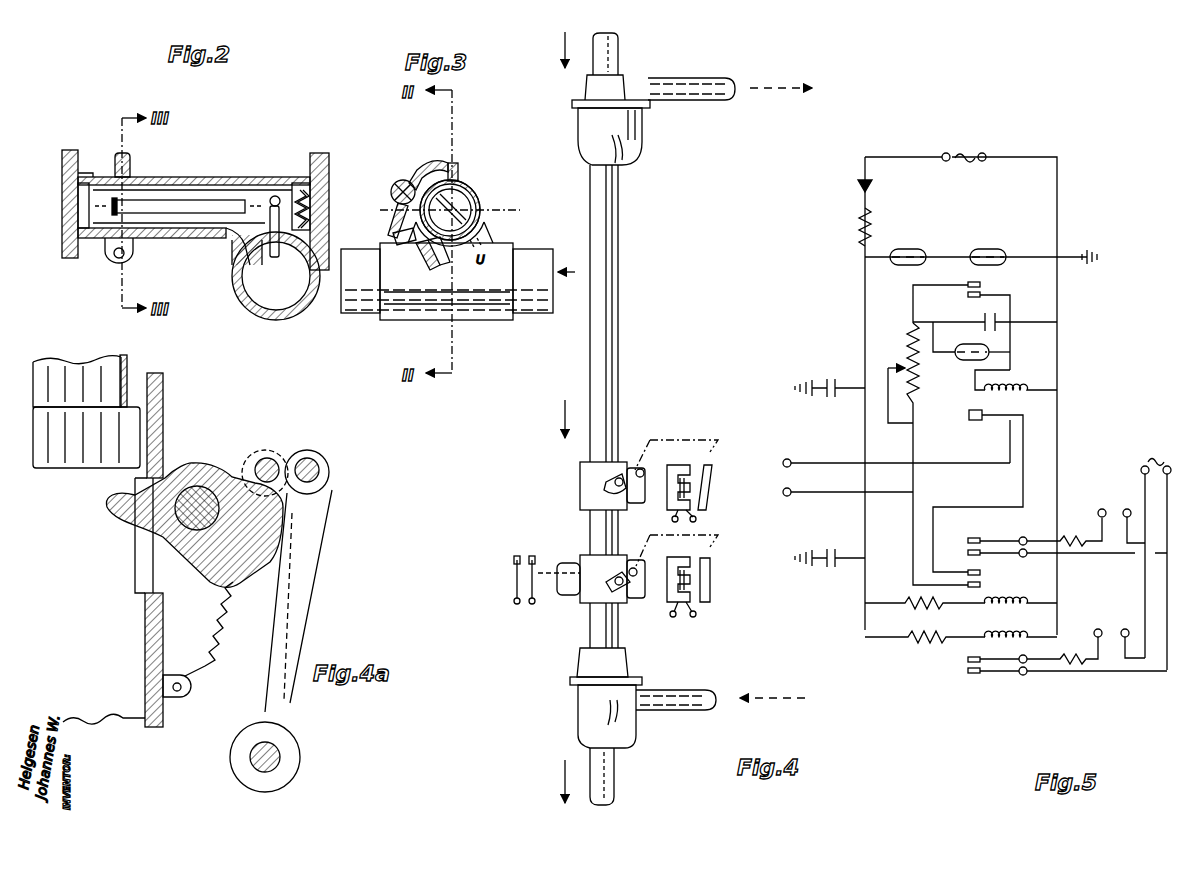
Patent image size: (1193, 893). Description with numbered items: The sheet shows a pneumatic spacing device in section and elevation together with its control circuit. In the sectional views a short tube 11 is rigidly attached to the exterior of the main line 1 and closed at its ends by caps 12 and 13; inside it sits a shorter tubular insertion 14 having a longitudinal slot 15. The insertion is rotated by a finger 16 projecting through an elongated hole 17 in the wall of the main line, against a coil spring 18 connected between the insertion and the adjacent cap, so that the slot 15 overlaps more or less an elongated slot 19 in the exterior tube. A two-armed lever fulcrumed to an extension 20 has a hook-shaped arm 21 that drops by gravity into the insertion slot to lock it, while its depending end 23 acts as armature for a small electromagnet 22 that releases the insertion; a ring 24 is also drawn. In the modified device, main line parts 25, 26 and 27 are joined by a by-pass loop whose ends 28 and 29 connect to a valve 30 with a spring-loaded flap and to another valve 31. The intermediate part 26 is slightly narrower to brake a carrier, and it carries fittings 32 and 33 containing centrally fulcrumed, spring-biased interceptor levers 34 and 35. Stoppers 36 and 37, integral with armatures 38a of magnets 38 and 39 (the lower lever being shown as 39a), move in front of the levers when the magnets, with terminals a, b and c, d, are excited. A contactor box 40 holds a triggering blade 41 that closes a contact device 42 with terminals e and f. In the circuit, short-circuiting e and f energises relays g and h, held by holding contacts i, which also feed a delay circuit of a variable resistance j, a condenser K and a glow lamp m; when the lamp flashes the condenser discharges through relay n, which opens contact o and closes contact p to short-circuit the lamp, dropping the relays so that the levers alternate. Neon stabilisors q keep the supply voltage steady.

In FIG. 2, the main line 1 is at (282, 322).
In FIG. 2, the short tube 11 is at (300, 180).
In FIG. 3, the short tube 11 is at (478, 192).
In FIG. 2, the cap 12 is at (329, 223).
In FIG. 2, the cap 13 is at (62, 250).
In FIG. 2, the tubular insertion 14 is at (170, 184).
In FIG. 3, the tubular insertion 14 is at (486, 203).
In FIG. 2, the longitudinal slot 15 is at (190, 213).
In FIG. 3, the longitudinal slot 15 is at (394, 209).
In FIG. 2, the finger 16 is at (238, 300).
In FIG. 3, the finger 16 is at (500, 234).
In FIG. 2, the elongated hole 17 is at (290, 238).
In FIG. 2, the coil spring 18 is at (320, 192).
In FIG. 2, the elongated slot 19 is at (205, 177).
In FIG. 3, the elongated slot 19 is at (468, 173).
In FIG. 3, the extension 20 is at (419, 172).
In FIG. 2, the arm 21 is at (128, 161).
In FIG. 3, the arm 21 is at (444, 163).
In FIG. 3, the electromagnet 22 is at (426, 252).
In FIG. 3, the depending end 23 is at (395, 222).
In FIG. 2, the ring 24 is at (300, 306).
In FIG. 4, the main line part 25 is at (620, 52).
In FIG. 4A, the main line part 26 is at (165, 398).
In FIG. 4, the main line part 26 is at (612, 326).
In FIG. 4, the main line part 27 is at (614, 778).
In FIG. 4, the loop end 28 is at (690, 78).
In FIG. 4, the loop end 29 is at (688, 690).
In FIG. 4, the valve 30 is at (625, 152).
In FIG. 4, the valve 31 is at (592, 705).
In FIG. 4, the fitting 32 is at (597, 492).
In FIG. 4, the fitting 33 is at (590, 603).
In FIG. 4A, the interceptor lever 34 is at (185, 463).
In FIG. 4, the interceptor lever 34 is at (630, 474).
In FIG. 4, the interceptor lever 35 is at (632, 595).
In FIG. 4A, the stopper 36 is at (316, 457).
In FIG. 4, the stopper 36 is at (641, 468).
In FIG. 4, the stopper 37 is at (637, 572).
In FIG. 4, the magnet 38 is at (685, 468).
In FIG. 4A, the armature 38a is at (307, 594).
In FIG. 4, the armature 38a is at (712, 472).
In FIG. 4, the magnet 39 is at (690, 560).
In FIG. 4, the lower switch lever 39a is at (712, 568).
In FIG. 4, the contactor box 40 is at (568, 566).
In FIG. 4, the triggering blade 41 is at (590, 562).
In FIG. 4, the contact device 42 is at (512, 588).
In FIG. 4, the terminal a is at (663, 523).
In FIG. 5, the terminal a is at (1102, 504).
In FIG. 4, the terminal b is at (701, 523).
In FIG. 5, the terminal b is at (1134, 517).
In FIG. 4, the terminal c is at (671, 633).
In FIG. 5, the terminal c is at (1098, 624).
In FIG. 4, the terminal d is at (694, 633).
In FIG. 5, the terminal d is at (1133, 634).
In FIG. 5, the terminal e is at (896, 455).
In FIG. 5, the terminal f is at (848, 501).
In FIG. 5, the relay g is at (961, 599).
In FIG. 5, the relay h is at (961, 631).
In FIG. 5, the holding contacts i is at (1067, 552).
In FIG. 5, the variable resistance j is at (928, 454).
In FIG. 5, the condenser K is at (985, 318).
In FIG. 5, the glow lamp m is at (996, 348).
In FIG. 5, the relay n is at (1016, 379).
In FIG. 5, the contact o is at (978, 490).
In FIG. 5, the contact p is at (961, 323).
In FIG. 5, the neon stabilisor q is at (908, 252).